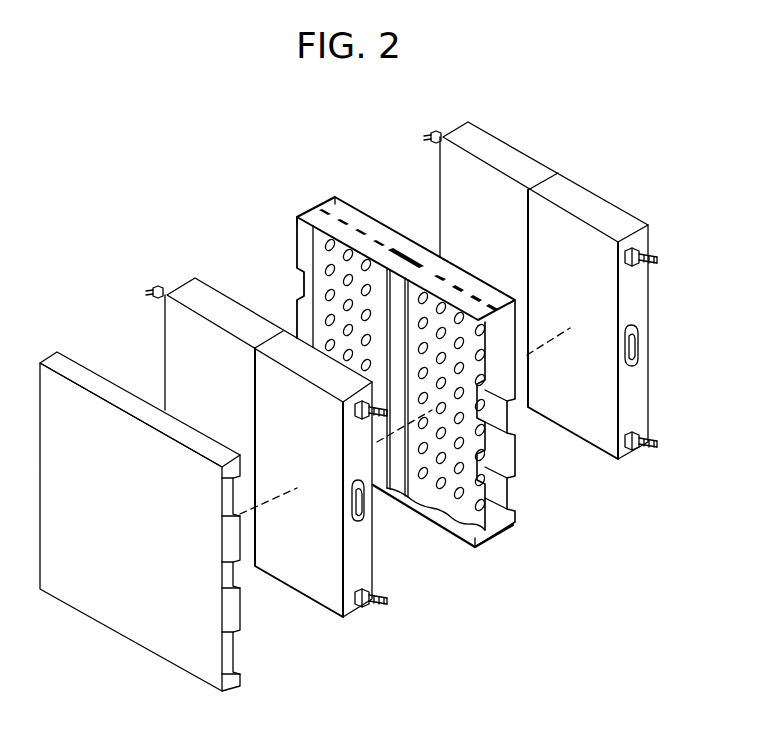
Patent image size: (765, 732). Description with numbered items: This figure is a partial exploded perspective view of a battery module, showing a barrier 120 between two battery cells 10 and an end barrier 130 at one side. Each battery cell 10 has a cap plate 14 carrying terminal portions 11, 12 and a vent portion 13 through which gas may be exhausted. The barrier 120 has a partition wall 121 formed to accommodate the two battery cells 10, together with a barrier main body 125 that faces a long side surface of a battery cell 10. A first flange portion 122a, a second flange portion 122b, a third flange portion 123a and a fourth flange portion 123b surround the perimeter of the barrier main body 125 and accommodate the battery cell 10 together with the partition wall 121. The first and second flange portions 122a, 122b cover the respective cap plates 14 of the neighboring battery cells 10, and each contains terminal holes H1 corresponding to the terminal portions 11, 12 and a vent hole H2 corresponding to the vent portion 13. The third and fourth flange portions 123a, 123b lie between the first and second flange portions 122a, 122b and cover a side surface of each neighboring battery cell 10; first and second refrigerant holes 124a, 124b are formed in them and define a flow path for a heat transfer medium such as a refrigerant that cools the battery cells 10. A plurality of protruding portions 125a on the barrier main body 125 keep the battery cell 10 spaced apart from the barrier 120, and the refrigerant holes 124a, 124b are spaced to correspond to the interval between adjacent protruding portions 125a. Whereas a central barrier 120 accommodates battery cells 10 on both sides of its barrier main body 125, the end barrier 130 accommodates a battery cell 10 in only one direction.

The battery cell 10 is at (168, 284).
The terminal portion 11 is at (658, 452).
The terminal portion 12 is at (658, 266).
The vent portion 13 is at (637, 350).
The cap plate 14 is at (637, 302).
The barrier 120 is at (407, 371).
The partition wall 121 is at (380, 266).
The first flange portion 122a is at (302, 276).
The second flange portion 122b is at (504, 509).
The third flange portion 123a is at (337, 200).
The fourth flange portion 123b is at (430, 510).
The first refrigerant hole 124a is at (325, 205).
The second refrigerant hole 124b is at (458, 533).
The barrier main body 125 is at (405, 387).
The protruding portion 125a is at (405, 287).
The terminal hole H1 is at (515, 485).
The vent hole H2 is at (513, 413).
The barrier 130 is at (230, 684).